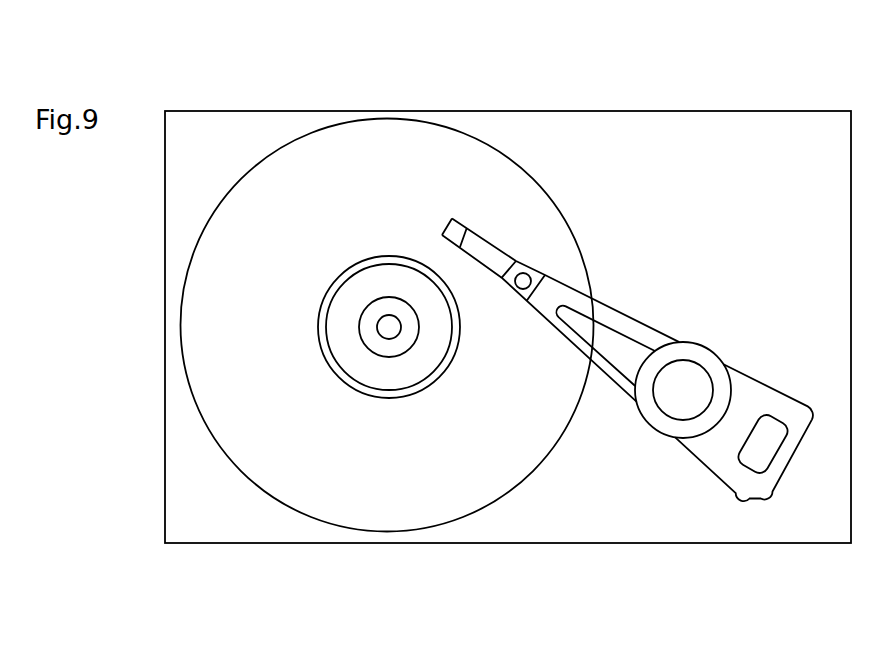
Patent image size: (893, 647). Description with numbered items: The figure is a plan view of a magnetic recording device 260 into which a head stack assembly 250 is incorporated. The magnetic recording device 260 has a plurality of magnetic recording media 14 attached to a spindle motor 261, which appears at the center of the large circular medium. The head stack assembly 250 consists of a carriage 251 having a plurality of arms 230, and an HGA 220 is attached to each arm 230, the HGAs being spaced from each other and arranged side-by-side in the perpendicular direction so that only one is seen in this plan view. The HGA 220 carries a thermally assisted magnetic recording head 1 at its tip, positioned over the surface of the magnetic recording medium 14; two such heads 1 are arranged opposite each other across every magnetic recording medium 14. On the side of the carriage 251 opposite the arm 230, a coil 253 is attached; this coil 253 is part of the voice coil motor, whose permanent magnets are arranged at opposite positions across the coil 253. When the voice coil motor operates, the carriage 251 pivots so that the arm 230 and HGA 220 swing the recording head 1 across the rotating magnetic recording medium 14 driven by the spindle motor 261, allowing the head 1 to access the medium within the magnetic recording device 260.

The thermally assisted magnetic recording head 1 is at (458, 222).
The magnetic recording medium 14 is at (312, 518).
The HGA 220 is at (497, 278).
The arm 230 is at (617, 386).
The head stack assembly 250 is at (627, 332).
The carriage 251 is at (692, 343).
The coil 253 is at (796, 447).
The magnetic recording device 260 is at (546, 84).
The spindle motor 261 is at (389, 328).